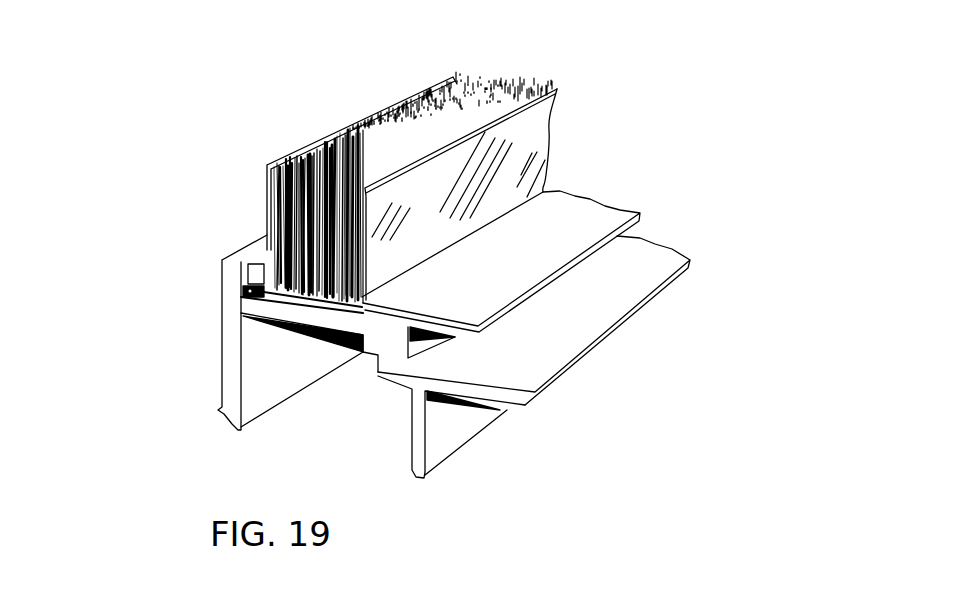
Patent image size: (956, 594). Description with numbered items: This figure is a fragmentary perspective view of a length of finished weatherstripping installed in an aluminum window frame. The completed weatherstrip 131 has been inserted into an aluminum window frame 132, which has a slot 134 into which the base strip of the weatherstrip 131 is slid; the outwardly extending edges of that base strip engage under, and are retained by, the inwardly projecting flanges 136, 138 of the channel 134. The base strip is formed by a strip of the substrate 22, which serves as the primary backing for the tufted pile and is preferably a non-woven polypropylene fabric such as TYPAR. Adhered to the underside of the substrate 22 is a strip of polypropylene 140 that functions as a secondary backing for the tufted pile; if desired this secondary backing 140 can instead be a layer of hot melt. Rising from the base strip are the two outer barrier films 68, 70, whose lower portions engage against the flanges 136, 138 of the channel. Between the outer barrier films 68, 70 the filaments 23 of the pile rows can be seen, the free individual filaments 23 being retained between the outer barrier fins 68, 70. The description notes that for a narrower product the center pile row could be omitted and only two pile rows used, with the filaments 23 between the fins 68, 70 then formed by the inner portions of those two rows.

The substrate 22 is at (249, 278).
The filaments 23 is at (510, 75).
The outer barrier film 68 is at (286, 160).
The outer barrier film 70 is at (527, 137).
The weatherstrip 131 is at (224, 186).
The aluminum window frame 132 is at (175, 390).
The slot 134 is at (411, 360).
The inwardly projecting flange 136 is at (246, 292).
The inwardly projecting flange 138 is at (367, 313).
The strip of polypropylene 140 is at (352, 370).